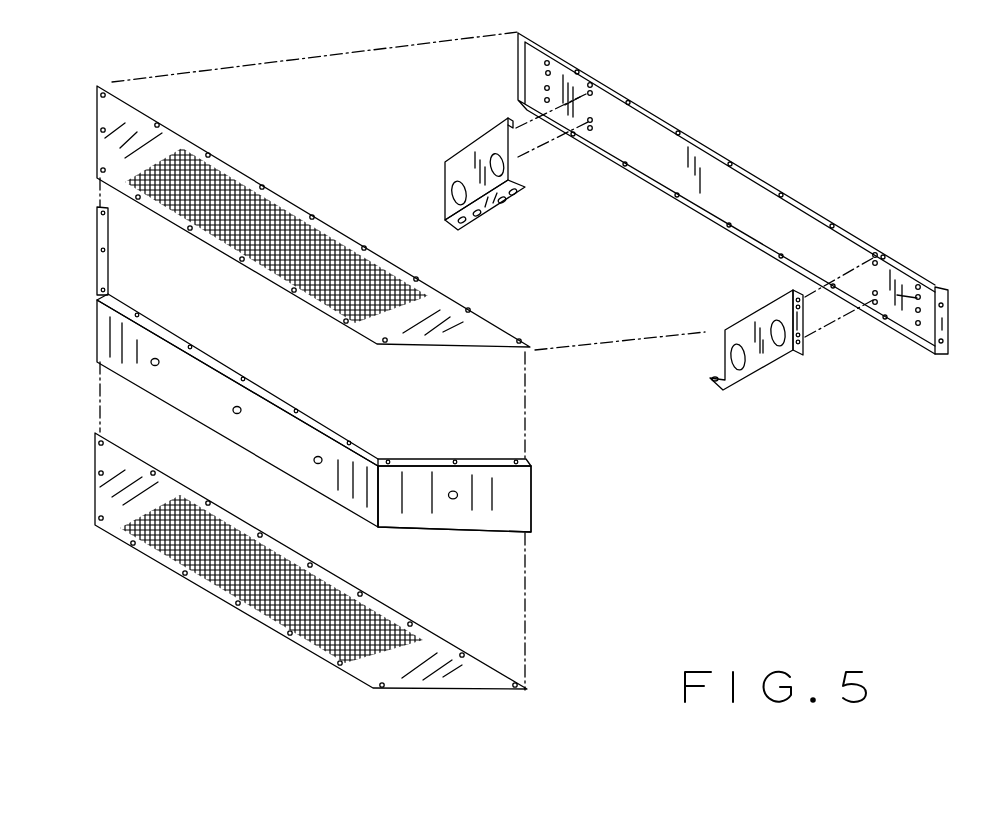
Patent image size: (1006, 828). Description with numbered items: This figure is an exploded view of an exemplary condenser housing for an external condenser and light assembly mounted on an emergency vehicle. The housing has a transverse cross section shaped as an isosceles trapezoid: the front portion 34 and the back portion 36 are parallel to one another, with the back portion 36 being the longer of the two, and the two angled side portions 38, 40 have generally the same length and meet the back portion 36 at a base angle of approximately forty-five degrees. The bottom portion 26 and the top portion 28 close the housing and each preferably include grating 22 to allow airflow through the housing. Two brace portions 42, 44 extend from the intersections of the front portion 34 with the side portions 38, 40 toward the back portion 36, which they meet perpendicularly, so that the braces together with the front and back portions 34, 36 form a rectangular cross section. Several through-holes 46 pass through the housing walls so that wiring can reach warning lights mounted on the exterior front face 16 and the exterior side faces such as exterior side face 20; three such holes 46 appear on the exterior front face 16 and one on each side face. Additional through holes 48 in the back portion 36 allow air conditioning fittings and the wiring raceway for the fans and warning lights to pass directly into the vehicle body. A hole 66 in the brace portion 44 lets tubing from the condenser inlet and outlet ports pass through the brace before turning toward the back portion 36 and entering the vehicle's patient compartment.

The exterior front face 16 is at (203, 396).
The exterior side face 20 is at (516, 507).
The grating 22 is at (243, 178).
The bottom portion 26 is at (430, 677).
The top portion 28 is at (133, 135).
The front portion 34 is at (318, 416).
The back portion 36 is at (702, 142).
The side portion 38 is at (100, 265).
The side portion 40 is at (490, 459).
The brace portion 42 is at (468, 150).
The brace portion 44 is at (762, 360).
The through-holes 46 is at (235, 407).
The through holes 48 is at (577, 72).
The hole 66 is at (740, 362).